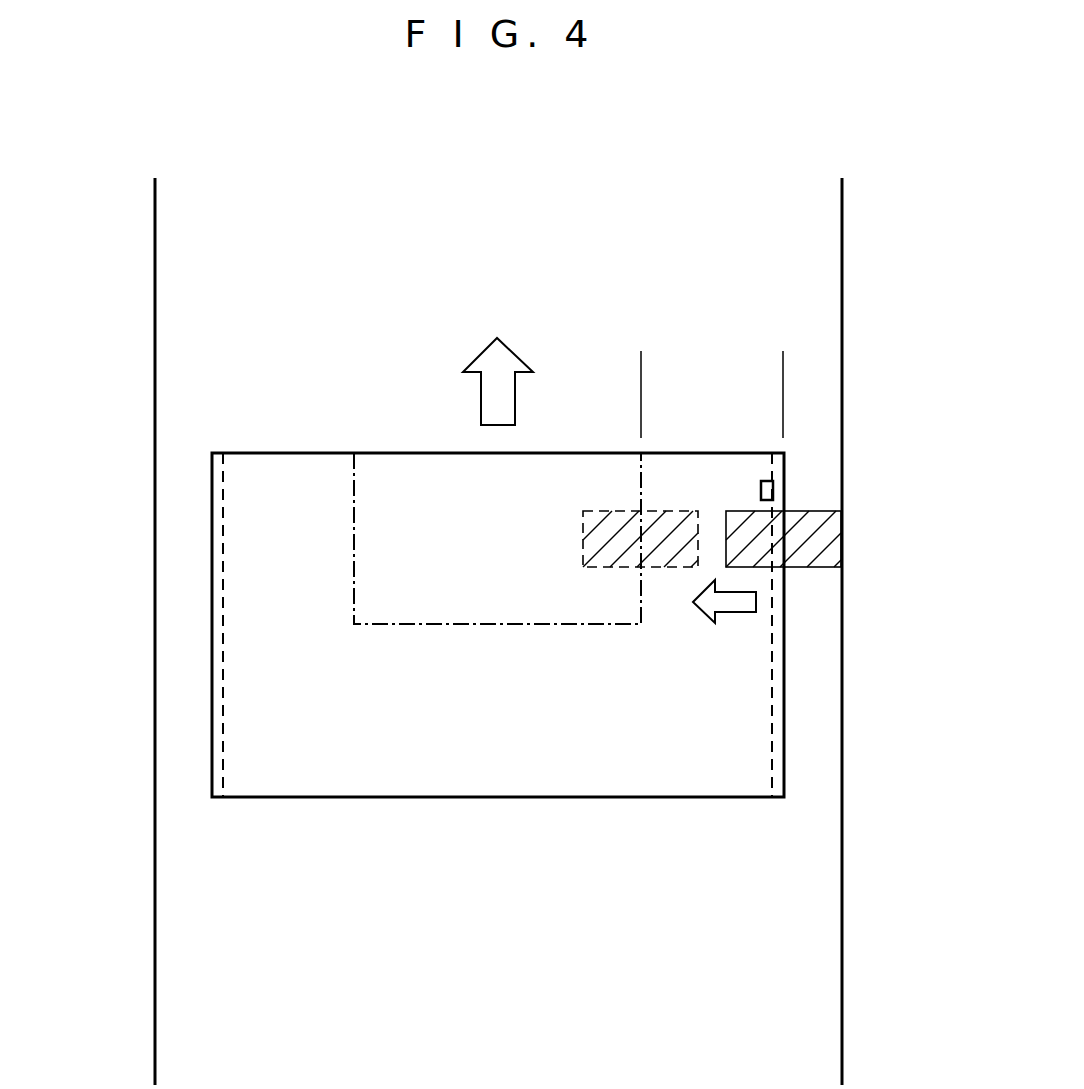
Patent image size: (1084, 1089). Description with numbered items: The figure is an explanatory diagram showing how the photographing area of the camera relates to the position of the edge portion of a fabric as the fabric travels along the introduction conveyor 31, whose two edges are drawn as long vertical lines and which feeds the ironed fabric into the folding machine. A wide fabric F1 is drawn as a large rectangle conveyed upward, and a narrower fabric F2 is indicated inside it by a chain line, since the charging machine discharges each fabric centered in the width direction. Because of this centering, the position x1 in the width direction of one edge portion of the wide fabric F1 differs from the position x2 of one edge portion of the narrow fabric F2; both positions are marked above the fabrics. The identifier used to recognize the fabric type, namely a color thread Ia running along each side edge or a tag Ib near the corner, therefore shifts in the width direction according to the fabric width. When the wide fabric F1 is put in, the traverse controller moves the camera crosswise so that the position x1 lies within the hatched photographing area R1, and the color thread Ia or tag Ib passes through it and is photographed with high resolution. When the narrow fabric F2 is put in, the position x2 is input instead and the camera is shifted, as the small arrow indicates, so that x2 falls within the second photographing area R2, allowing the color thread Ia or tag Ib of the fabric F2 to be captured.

The introduction conveyor 31 is at (842, 285).
The wide fabric F1 is at (368, 797).
The narrow fabric F2 is at (522, 624).
The color thread Ia is at (223, 742).
The tag Ib is at (773, 490).
The photographing area R1 is at (806, 567).
The photographing area R2 is at (667, 567).
The position in the width direction of one edge portion of the wide fabric x1 is at (785, 380).
The position in the width direction of one edge portion of the narrow fabric x2 is at (643, 380).